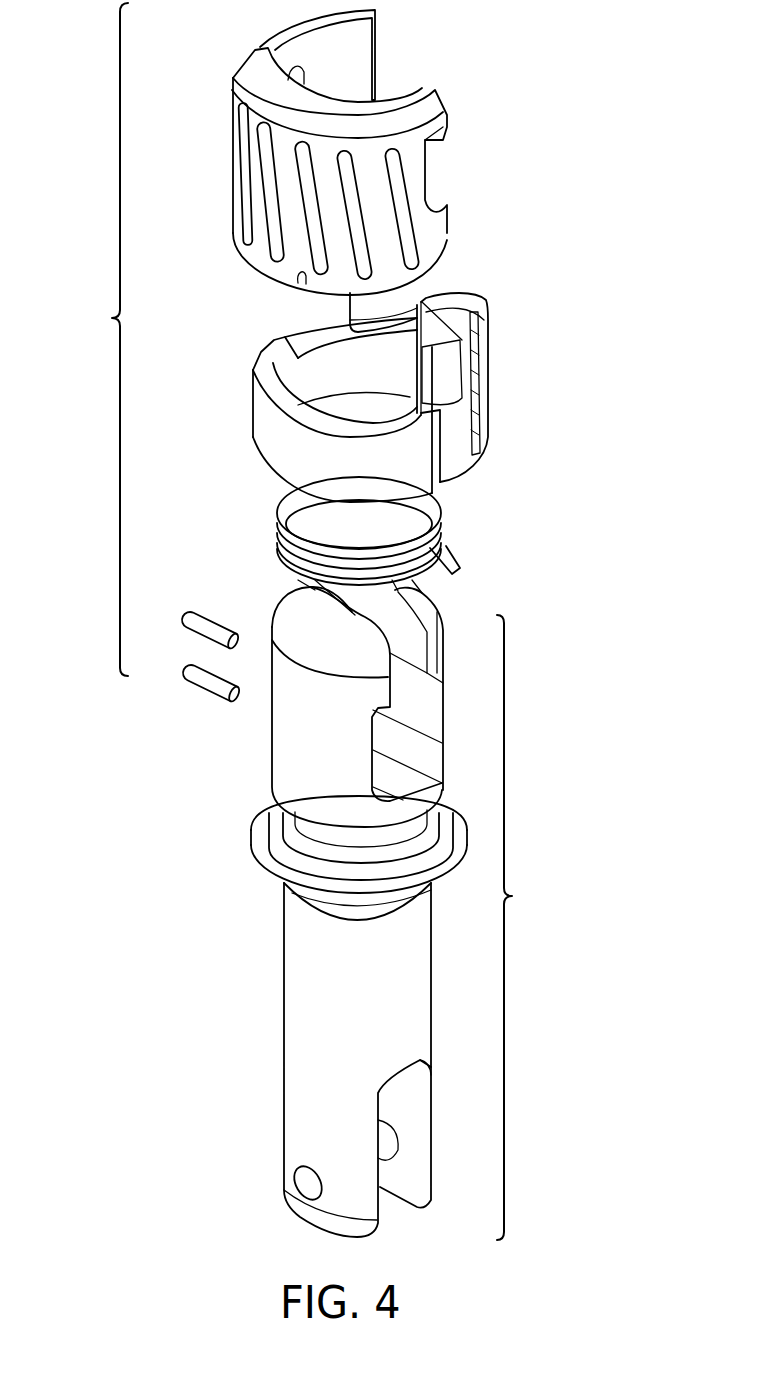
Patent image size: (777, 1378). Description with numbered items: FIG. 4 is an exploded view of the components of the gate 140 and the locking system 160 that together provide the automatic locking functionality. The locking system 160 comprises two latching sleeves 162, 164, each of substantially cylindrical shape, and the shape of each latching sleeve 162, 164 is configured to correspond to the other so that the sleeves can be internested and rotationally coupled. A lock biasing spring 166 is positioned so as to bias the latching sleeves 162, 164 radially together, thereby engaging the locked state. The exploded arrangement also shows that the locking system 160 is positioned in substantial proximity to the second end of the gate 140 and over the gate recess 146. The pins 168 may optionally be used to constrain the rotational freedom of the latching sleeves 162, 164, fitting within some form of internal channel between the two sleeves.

The gate 140 is at (512, 896).
The gate recess 146 is at (412, 718).
The locking system 160 is at (112, 318).
The latching sleeve 162 is at (465, 291).
The latching sleeve 164 is at (428, 110).
The lock biasing spring 166 is at (433, 547).
The pins 168 is at (218, 636).